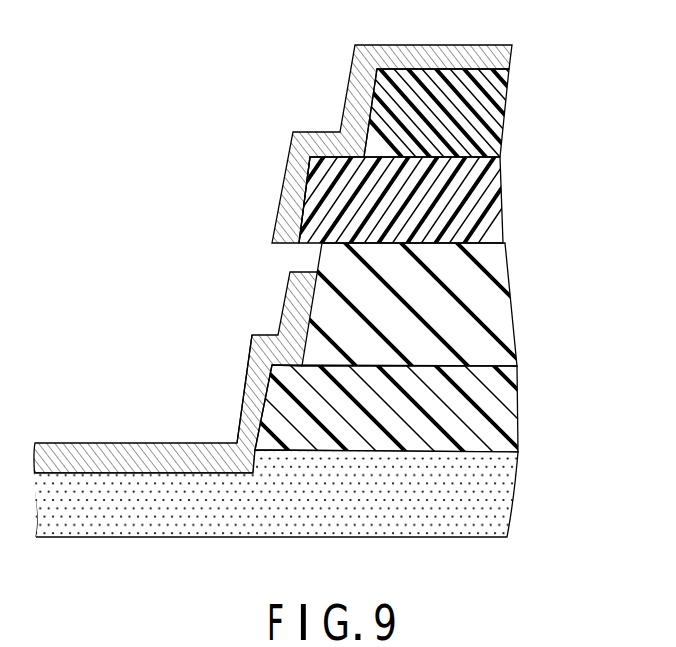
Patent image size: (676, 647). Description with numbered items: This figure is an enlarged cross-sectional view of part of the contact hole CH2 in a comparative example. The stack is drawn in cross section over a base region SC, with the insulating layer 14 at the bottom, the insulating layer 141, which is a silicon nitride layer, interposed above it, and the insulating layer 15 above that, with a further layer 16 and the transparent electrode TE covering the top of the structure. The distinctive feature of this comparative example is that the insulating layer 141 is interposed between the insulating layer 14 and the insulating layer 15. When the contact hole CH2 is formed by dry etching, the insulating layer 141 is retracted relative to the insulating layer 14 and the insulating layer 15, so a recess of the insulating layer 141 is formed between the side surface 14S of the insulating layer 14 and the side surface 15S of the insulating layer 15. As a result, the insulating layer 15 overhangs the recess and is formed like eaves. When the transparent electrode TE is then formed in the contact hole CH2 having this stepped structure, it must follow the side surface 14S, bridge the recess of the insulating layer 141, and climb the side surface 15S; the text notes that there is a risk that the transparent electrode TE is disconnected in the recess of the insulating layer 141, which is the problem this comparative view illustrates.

The transparent electrode TE is at (500, 55).
The upper semiconductor layer 16 is at (492, 118).
The insulating layer 15 is at (493, 192).
The insulating layer 141 is at (498, 313).
The insulating layer 14 is at (512, 400).
The substrate / semiconductor base SC is at (507, 492).
The side surface 15S is at (302, 182).
The side surface 14S is at (262, 408).
The contact hole CH2 is at (200, 208).